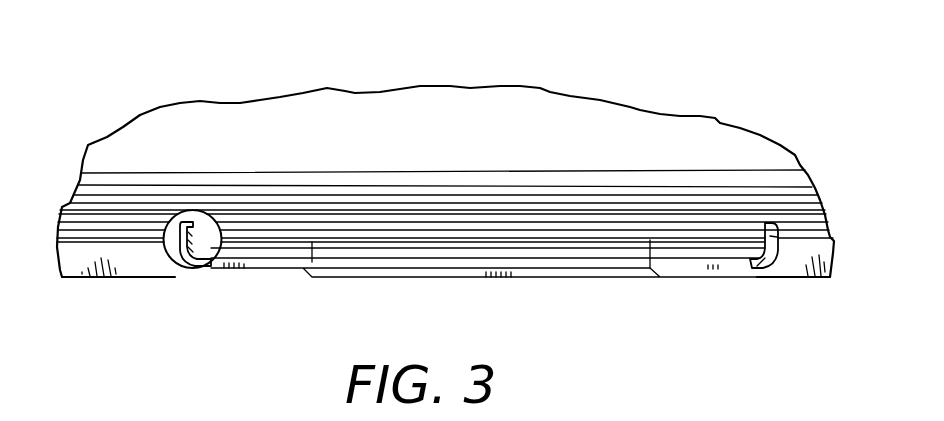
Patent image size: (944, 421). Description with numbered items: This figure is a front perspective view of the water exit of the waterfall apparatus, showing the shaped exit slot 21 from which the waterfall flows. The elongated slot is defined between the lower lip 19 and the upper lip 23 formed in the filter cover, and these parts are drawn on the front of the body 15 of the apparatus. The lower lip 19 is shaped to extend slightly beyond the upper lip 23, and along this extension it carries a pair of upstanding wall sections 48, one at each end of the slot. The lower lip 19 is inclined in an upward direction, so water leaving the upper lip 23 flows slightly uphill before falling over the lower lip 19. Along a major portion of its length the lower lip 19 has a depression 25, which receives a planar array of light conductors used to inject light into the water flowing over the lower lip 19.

The body 15 is at (525, 103).
The upper lip 23 is at (168, 262).
The upstanding wall sections 48 is at (218, 272).
The depression 25 is at (370, 275).
The exit slot 21 is at (678, 246).
The lower lip 19 is at (757, 267).